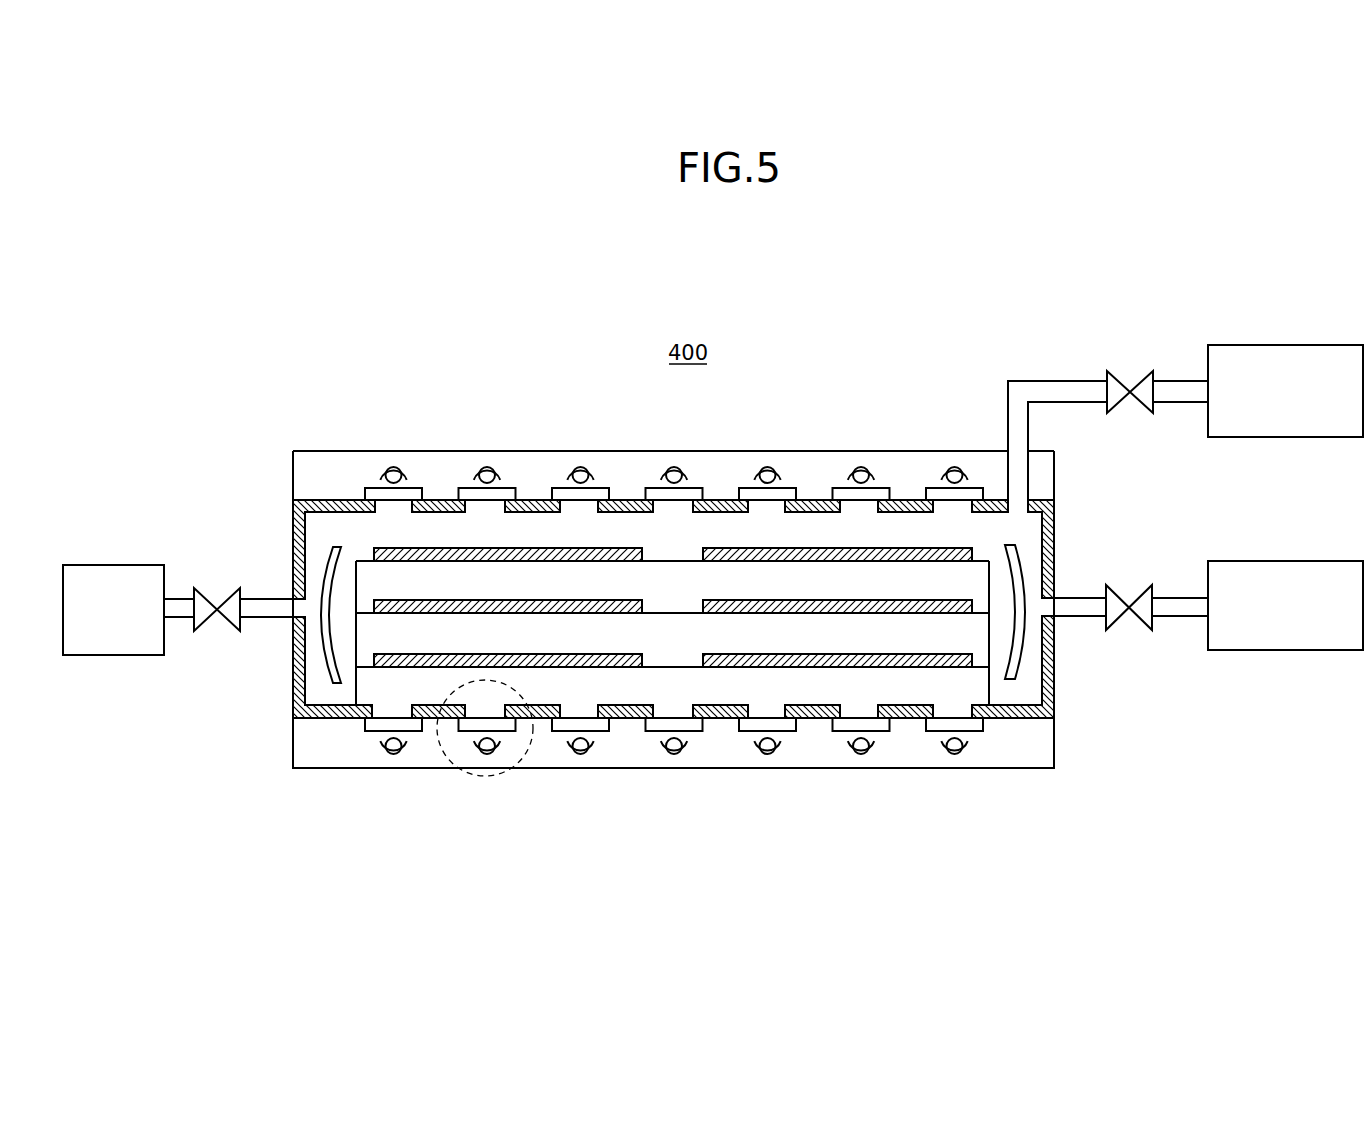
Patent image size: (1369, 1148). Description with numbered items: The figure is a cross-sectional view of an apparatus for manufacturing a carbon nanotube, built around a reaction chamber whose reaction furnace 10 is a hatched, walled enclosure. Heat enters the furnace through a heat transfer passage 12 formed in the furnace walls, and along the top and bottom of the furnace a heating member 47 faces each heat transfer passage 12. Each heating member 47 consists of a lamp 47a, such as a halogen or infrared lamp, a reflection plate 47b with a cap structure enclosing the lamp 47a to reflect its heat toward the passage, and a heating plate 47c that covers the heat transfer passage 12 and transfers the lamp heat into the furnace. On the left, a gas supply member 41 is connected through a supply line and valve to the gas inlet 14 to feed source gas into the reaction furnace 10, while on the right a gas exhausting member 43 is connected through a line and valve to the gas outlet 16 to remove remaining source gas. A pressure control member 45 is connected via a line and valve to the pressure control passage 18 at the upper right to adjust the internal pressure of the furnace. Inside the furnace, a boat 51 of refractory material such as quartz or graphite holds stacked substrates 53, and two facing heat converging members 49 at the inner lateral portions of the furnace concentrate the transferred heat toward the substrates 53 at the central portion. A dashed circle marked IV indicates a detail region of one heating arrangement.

The reaction furnace 10 is at (293, 707).
The heat transfer passage 12 is at (678, 505).
The gas inlet 14 is at (300, 607).
The gas outlet 16 is at (1050, 600).
The pressure control passage 18 is at (1012, 512).
The gas supply member 41 is at (112, 565).
The gas exhausting member 43 is at (1284, 651).
The pressure control member 45 is at (1286, 345).
The heating member 47 is at (392, 437).
The lamp 47a is at (378, 480).
The reflection plate 47b is at (393, 461).
The heating plate 47c is at (412, 455).
The heat converging member 49 is at (328, 556).
The boat 51 is at (980, 684).
The substrate 53 is at (797, 666).
The detail region IV is at (485, 776).